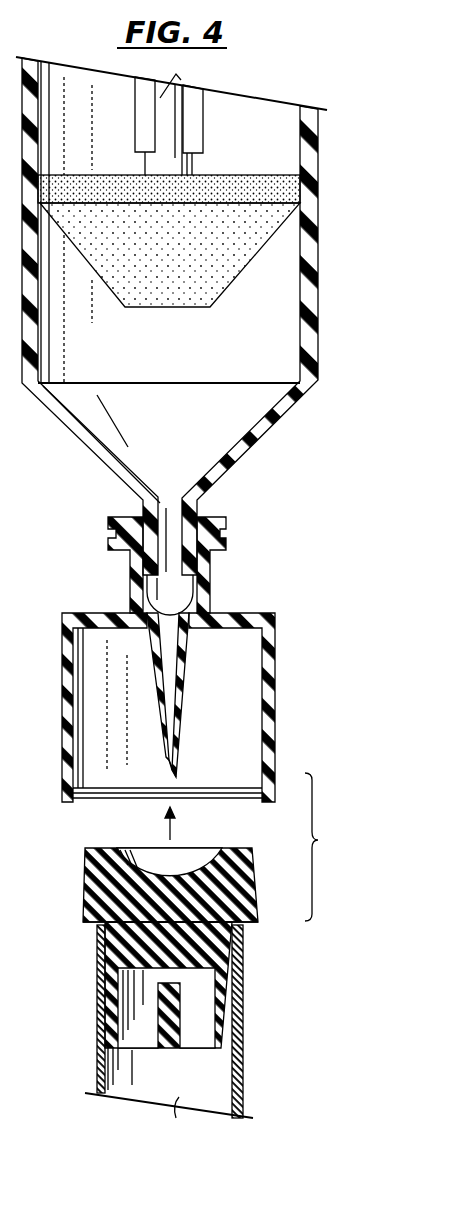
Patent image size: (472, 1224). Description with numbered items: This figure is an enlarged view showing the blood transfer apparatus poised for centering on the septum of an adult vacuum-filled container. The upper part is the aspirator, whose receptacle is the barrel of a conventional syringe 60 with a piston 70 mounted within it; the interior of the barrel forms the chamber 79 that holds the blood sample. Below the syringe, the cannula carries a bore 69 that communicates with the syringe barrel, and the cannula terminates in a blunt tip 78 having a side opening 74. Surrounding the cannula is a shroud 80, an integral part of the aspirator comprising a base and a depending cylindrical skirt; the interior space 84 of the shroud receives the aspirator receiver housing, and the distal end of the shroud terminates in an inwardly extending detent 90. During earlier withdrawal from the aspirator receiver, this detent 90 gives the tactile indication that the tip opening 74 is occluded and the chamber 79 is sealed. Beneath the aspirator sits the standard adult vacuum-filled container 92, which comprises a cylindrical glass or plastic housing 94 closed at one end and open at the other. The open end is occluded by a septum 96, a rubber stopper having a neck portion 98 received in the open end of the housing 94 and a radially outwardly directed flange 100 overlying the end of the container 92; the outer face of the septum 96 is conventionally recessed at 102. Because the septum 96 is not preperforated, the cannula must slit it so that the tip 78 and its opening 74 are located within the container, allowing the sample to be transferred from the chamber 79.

The syringe 60 is at (355, 132).
The piston 70 is at (273, 236).
The chamber 79 is at (271, 347).
The cap cavity 84 is at (216, 638).
The shroud 80 is at (274, 641).
The bore 69 is at (176, 668).
The side opening 74 is at (166, 757).
The blunt tip 78 is at (172, 776).
The detent 90 is at (263, 803).
The recess 102 is at (135, 848).
The flange 100 is at (83, 883).
The neck portion 98 is at (110, 957).
The housing 94 is at (97, 992).
The septum 96 is at (243, 916).
The vacuum-filled container 92 is at (243, 1020).